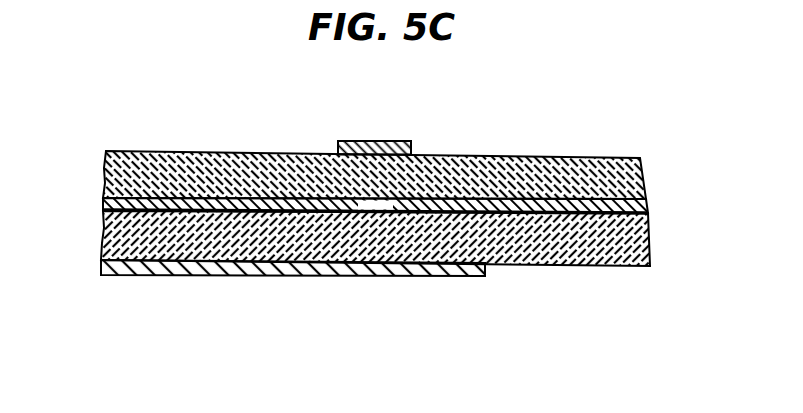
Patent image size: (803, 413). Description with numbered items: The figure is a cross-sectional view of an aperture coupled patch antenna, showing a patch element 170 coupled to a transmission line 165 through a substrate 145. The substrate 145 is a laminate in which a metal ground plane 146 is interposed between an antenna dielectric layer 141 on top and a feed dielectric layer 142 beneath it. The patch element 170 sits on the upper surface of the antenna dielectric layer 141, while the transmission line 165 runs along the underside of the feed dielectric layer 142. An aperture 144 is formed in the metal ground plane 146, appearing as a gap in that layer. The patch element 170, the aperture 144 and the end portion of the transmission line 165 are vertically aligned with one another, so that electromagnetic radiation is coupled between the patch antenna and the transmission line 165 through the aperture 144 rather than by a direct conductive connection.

The antenna dielectric layer 141 is at (556, 165).
The feed dielectric layer 142 is at (601, 252).
The aperture 144 is at (358, 197).
The substrate 145 is at (82, 143).
The metal ground plane 146 is at (640, 198).
The transmission line 165 is at (383, 259).
The patch element 170 is at (368, 133).